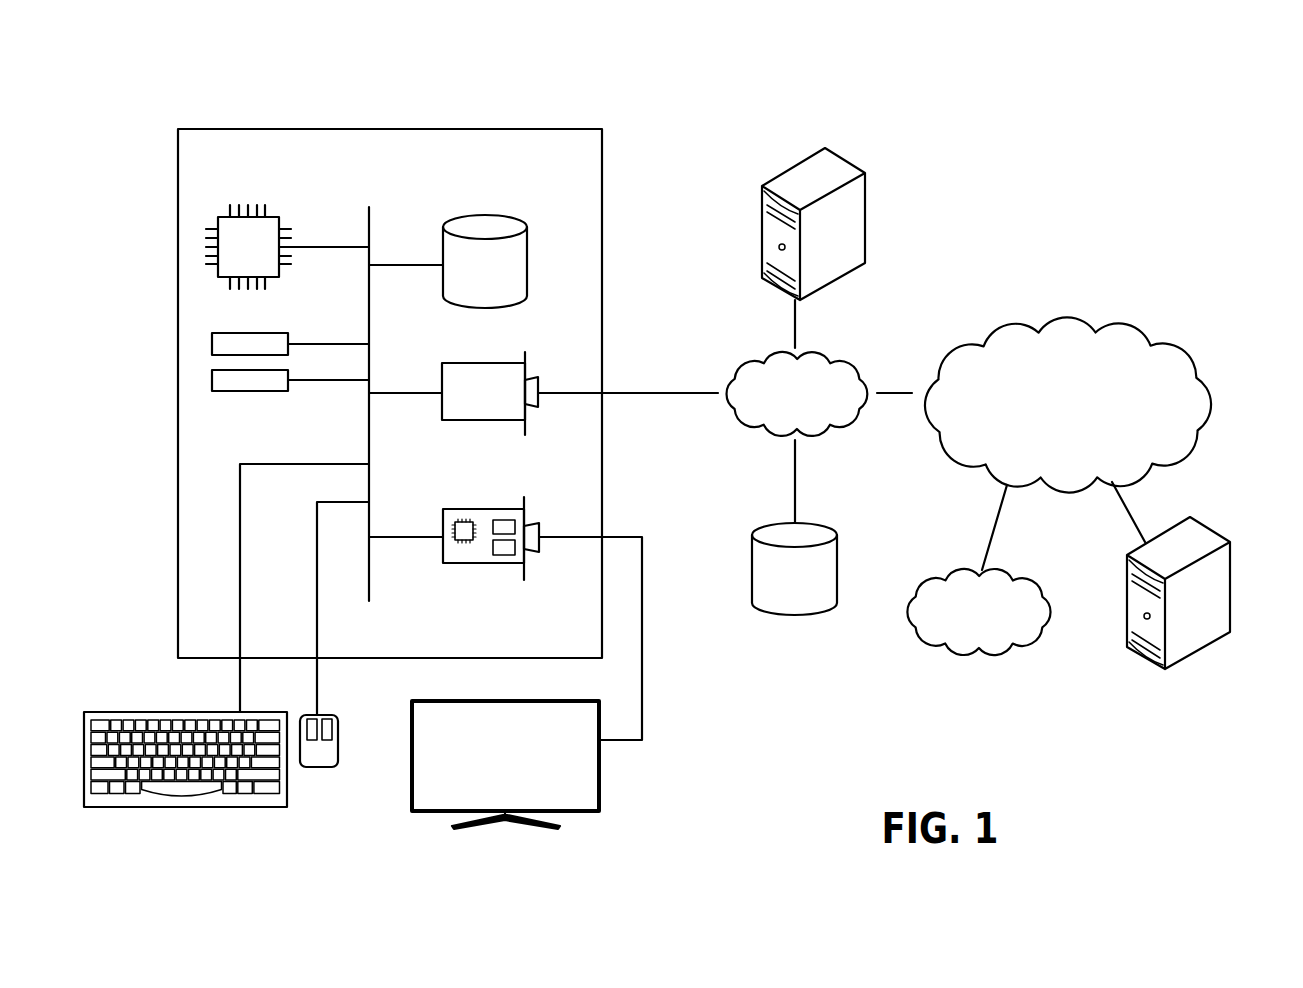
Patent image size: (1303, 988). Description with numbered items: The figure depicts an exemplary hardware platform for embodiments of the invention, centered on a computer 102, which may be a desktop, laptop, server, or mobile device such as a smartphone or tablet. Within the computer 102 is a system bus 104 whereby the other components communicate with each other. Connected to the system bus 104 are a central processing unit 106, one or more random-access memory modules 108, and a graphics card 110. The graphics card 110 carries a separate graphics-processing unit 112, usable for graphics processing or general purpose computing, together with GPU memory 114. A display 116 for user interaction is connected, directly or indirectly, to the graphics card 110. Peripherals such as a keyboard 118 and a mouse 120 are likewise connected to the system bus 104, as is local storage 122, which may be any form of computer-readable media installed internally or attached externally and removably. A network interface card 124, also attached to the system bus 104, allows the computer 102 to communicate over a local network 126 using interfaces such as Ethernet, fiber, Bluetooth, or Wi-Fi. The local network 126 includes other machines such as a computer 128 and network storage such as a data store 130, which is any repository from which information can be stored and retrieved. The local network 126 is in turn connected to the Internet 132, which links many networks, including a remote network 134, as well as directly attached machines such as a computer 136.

The computer 102 is at (555, 129).
The system bus 104 is at (370, 217).
The central processing unit 106 is at (272, 217).
The random-access memory modules 108 is at (290, 375).
The graphics card 110 is at (505, 602).
The graphics-processing unit 112 is at (465, 537).
The GPU memory 114 is at (502, 550).
The display 116 is at (602, 793).
The keyboard 118 is at (188, 807).
The mouse 120 is at (317, 767).
The local storage 122 is at (530, 248).
The network interface card 124 is at (440, 375).
The local network 126 is at (852, 348).
The computer 128 is at (852, 160).
The data store 130 is at (828, 522).
The Internet 132 is at (1112, 312).
The remote network 134 is at (1033, 570).
The computer 136 is at (1210, 523).